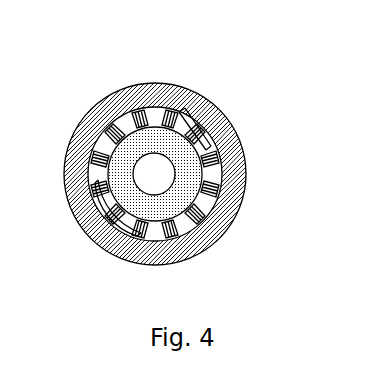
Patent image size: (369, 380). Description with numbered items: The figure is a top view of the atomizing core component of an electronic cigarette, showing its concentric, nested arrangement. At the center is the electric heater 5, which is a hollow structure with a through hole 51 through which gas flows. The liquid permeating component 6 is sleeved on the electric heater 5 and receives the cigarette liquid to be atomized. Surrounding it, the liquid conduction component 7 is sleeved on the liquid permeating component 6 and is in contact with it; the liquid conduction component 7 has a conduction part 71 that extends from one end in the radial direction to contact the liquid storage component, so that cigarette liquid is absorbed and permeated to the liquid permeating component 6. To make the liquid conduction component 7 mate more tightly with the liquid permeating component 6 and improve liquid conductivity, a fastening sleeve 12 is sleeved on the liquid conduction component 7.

The conduction part 71 is at (112, 105).
The liquid conduction component 7 is at (132, 112).
The fastening sleeve 12 is at (175, 112).
The liquid permeating component 6 is at (193, 113).
The electric heater 5 is at (227, 137).
The through hole 51 is at (158, 174).